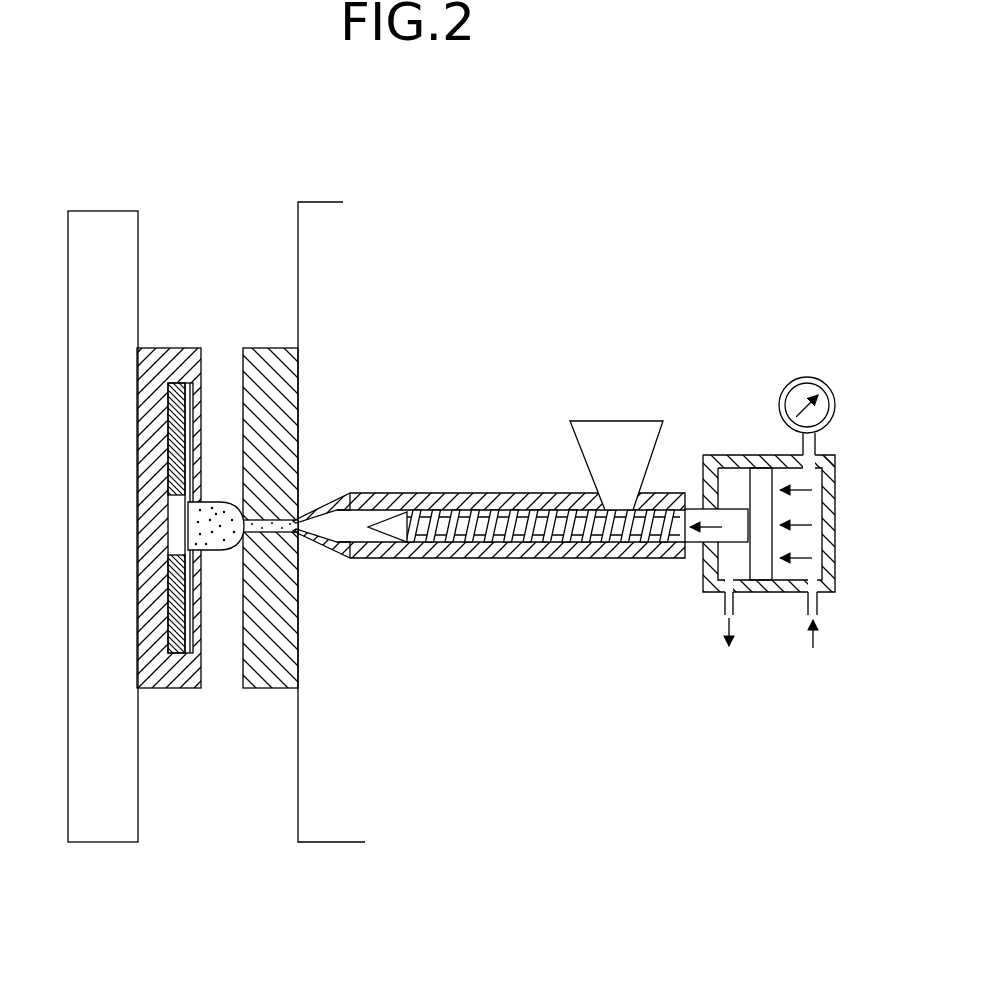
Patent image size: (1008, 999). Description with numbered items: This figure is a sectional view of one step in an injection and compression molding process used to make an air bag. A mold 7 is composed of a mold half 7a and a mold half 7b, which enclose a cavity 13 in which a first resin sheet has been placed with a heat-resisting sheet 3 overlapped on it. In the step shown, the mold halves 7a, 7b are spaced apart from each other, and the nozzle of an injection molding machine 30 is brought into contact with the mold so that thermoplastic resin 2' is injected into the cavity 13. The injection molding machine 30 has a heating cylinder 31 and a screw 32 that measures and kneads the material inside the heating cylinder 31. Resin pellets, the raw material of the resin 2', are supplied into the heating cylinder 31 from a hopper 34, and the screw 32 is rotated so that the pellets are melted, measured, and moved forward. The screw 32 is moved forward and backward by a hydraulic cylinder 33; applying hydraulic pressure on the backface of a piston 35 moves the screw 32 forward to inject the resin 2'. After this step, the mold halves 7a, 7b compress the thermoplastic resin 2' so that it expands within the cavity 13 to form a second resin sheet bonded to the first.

The mold 7 is at (278, 690).
The mold half 7a is at (160, 347).
The mold half 7b is at (260, 347).
The heat-resisting sheet 3 is at (188, 347).
The thermoplastic resin 2' is at (216, 420).
The cavity 13 is at (203, 553).
The injection molding machine 30 is at (520, 481).
The heating cylinder 31 is at (405, 560).
The screw 32 is at (427, 492).
The hydraulic cylinder 33 is at (700, 596).
The hopper 34 is at (625, 440).
The piston 35 is at (760, 485).